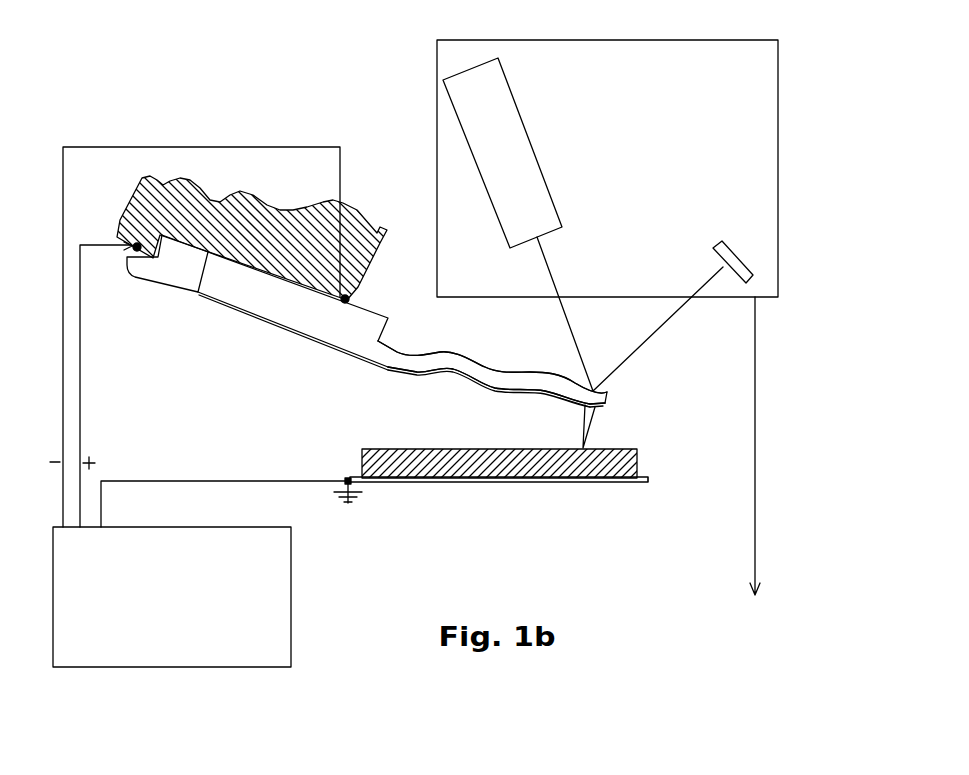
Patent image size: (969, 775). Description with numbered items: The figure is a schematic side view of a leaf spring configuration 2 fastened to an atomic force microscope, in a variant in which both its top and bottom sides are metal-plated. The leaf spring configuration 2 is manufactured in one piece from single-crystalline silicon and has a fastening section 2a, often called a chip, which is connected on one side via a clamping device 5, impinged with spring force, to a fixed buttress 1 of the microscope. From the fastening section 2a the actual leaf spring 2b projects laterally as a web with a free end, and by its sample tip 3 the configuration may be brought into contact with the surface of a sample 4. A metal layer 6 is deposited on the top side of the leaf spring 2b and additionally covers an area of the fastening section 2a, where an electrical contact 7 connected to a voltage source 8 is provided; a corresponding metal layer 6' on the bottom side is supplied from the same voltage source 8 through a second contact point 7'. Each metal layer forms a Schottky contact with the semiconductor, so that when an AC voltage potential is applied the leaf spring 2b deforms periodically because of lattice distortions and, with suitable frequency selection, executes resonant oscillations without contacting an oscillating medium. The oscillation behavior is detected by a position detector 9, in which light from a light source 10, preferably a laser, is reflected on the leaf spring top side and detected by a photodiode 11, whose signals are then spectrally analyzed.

The fixed buttress 1 is at (252, 238).
The leaf spring configuration 2 is at (385, 355).
The fastening section 2a is at (293, 311).
The leaf spring 2b is at (543, 382).
The sample tip 3 is at (595, 427).
The sample 4 is at (499, 466).
The clamping device 5 is at (157, 290).
The metal layer 6 is at (492, 359).
The metal layer on bottom side 6' is at (496, 392).
The electrical contact 7 is at (375, 283).
The second contact point 7' is at (110, 212).
The voltage source 8 is at (172, 597).
The position detector 9 is at (714, 104).
The light source 10 is at (502, 153).
The photodiode 11 is at (742, 257).